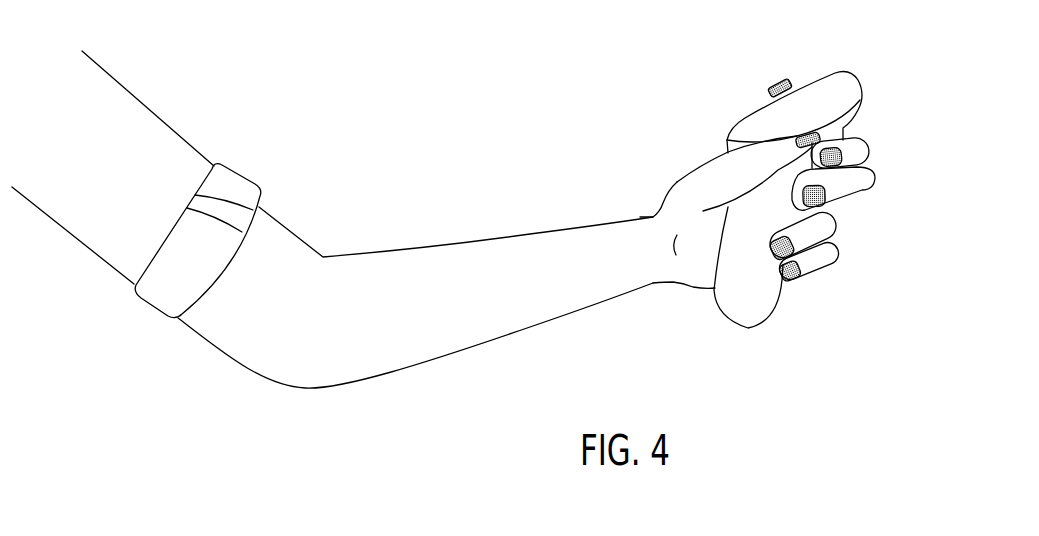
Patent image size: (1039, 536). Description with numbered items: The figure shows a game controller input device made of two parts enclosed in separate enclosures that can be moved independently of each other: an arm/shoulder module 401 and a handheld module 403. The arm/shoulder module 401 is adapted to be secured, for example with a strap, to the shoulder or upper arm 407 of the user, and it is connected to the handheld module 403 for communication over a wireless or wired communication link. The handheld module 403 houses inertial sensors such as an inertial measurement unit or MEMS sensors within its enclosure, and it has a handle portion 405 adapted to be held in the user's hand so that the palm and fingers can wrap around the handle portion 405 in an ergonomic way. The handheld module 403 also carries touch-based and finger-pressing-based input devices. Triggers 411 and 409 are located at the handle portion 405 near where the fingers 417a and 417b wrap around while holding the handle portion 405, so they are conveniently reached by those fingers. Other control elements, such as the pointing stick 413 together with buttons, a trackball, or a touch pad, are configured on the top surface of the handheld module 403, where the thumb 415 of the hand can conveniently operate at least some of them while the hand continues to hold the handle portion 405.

The arm/shoulder module 401 is at (262, 175).
The handheld module 403 is at (824, 74).
The handle portion 405 is at (762, 313).
The shoulder or upper arm 407 is at (103, 265).
The trigger 409 is at (810, 135).
The trigger 411 is at (821, 256).
The pointing stick 413 is at (770, 88).
The thumb 415 is at (713, 177).
The finger 417a is at (855, 153).
The finger 417b is at (853, 187).